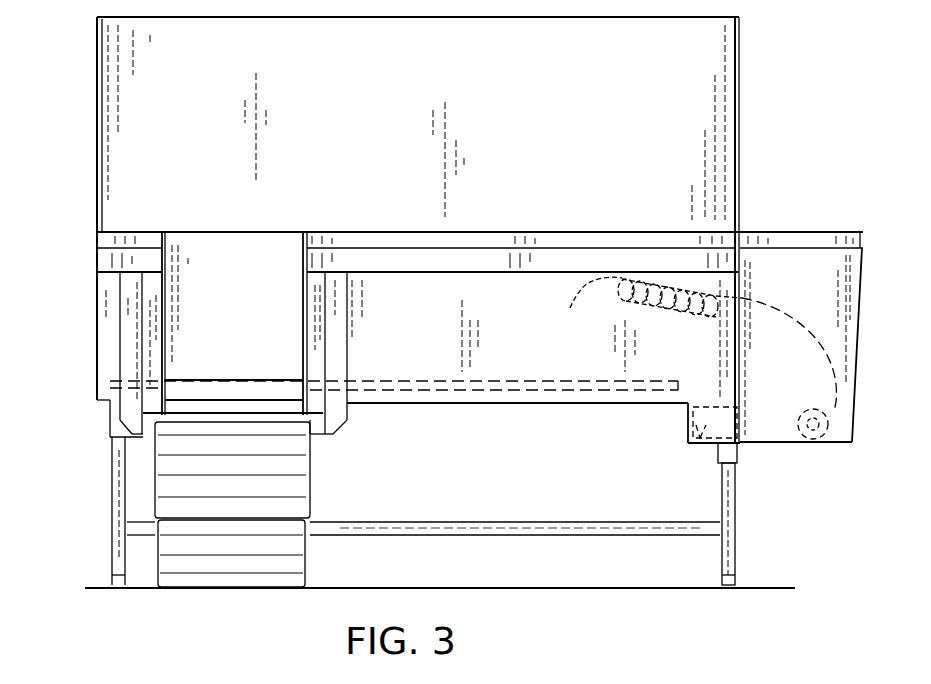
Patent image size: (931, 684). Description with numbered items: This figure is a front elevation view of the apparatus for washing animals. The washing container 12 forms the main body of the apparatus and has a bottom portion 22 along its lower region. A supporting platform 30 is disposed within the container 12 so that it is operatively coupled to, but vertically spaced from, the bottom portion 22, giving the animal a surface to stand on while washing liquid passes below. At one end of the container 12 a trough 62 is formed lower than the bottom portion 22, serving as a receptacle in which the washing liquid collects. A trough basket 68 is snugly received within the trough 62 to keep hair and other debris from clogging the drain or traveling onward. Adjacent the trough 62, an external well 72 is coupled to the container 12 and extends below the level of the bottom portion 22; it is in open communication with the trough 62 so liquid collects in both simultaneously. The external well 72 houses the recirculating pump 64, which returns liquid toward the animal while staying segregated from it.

The washing container 12 is at (107, 300).
The bottom portion 22 is at (403, 403).
The supporting platform 30 is at (503, 393).
The trough 62 is at (687, 427).
The recirculating pump 64 is at (808, 436).
The trough basket 68 is at (697, 447).
The external well 72 is at (837, 298).